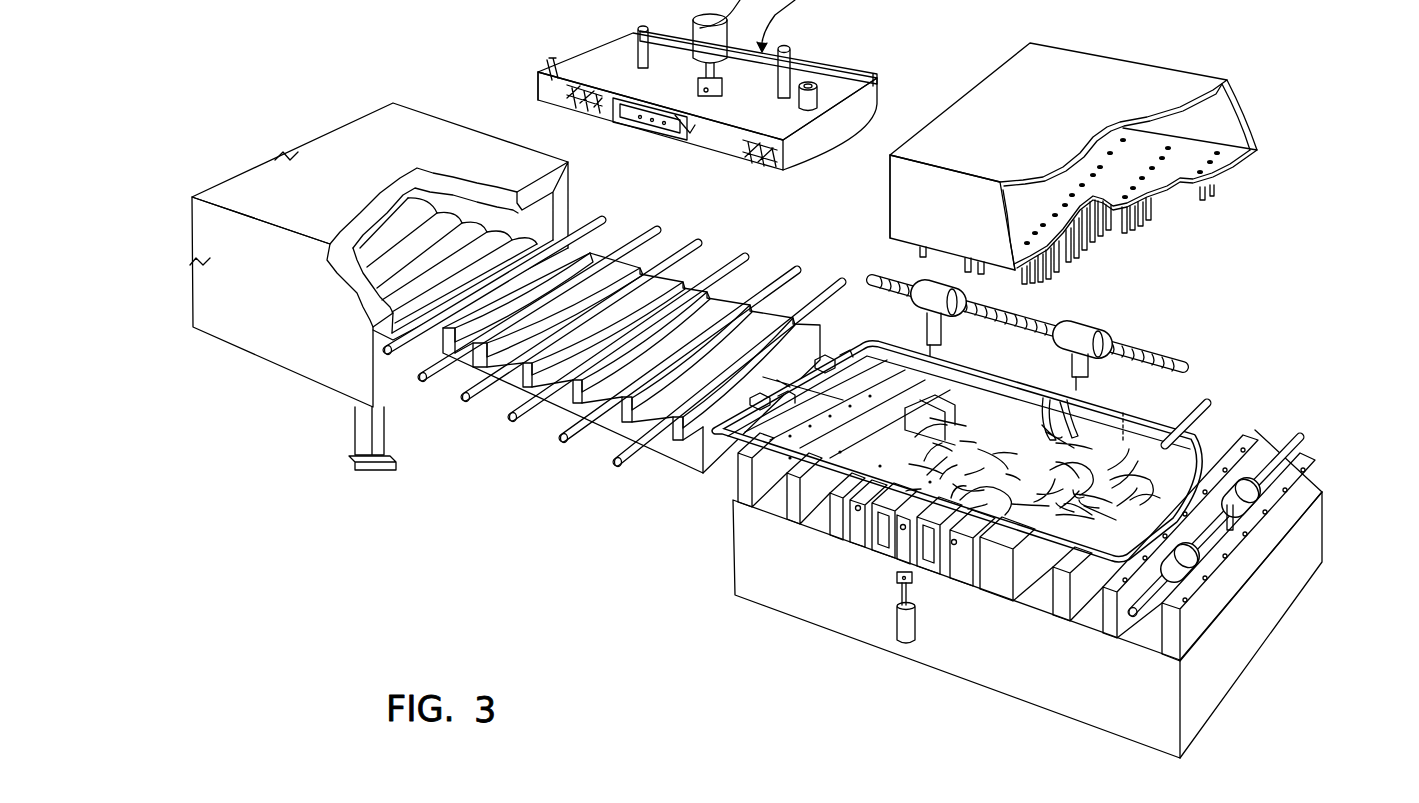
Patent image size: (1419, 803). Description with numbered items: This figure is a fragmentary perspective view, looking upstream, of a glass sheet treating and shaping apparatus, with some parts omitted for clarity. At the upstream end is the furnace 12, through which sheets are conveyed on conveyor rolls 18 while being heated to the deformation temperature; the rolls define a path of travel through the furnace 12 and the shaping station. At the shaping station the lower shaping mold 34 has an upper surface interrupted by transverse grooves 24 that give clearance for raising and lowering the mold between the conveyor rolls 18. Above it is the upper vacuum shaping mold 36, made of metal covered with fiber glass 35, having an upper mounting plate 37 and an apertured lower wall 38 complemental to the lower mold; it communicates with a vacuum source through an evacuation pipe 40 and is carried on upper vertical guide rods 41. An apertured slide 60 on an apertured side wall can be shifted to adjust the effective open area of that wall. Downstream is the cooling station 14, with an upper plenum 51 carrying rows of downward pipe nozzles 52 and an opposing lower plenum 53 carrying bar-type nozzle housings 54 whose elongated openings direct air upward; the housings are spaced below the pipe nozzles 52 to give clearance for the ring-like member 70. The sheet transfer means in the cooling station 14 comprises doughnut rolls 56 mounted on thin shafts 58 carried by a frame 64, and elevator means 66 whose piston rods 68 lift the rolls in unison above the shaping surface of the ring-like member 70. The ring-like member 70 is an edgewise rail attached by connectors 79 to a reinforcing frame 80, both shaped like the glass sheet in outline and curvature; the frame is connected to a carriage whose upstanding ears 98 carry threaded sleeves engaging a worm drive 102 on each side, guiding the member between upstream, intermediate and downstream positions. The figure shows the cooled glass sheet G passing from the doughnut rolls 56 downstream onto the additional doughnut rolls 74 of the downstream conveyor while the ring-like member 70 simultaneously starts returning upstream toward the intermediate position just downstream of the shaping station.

The furnace 12 is at (437, 113).
The cooling station 14 is at (1118, 55).
The conveyor rolls 18 is at (613, 450).
The grooves 24 is at (567, 390).
The lower shaping mold 34 is at (695, 477).
The fiber glass 35 is at (590, 113).
The upper vacuum shaping mold 36 is at (815, 58).
The upper mounting plate 37 is at (617, 122).
The lower wall 38 is at (877, 100).
The evacuation pipe 40 is at (820, 99).
The upper vertical guide rods 41 is at (633, 33).
The upper plenum 51 is at (890, 205).
The pipe nozzles 52 is at (1085, 243).
The lower plenum 53 is at (1327, 515).
The bar-type nozzle housings 54 is at (1313, 468).
The doughnut rolls 56 is at (920, 403).
The thin shafts 58 is at (903, 528).
The apertured slide 60 is at (693, 133).
The frame 64 is at (887, 565).
The elevator means 66 is at (917, 633).
The piston rod 68 is at (913, 592).
The ring-like member 70 is at (847, 348).
The additional doughnut rolls 74 is at (1246, 498).
The connectors 79 is at (1083, 393).
The reinforcing frame 80 is at (733, 458).
The upstanding ears 98 is at (1067, 358).
The worm drive 102 is at (1133, 345).
The glass sheet G is at (1090, 563).